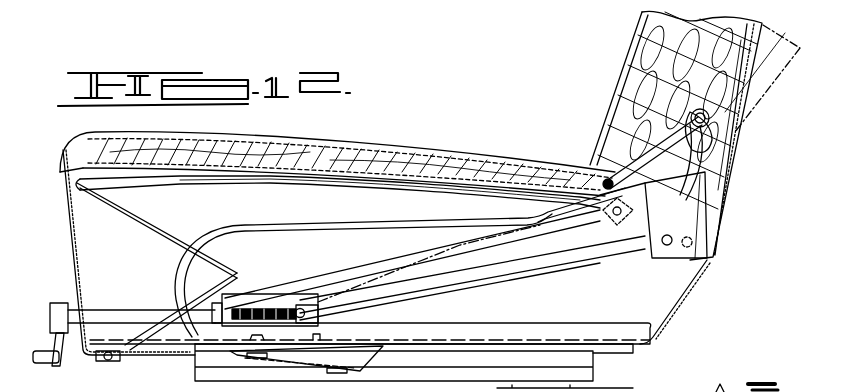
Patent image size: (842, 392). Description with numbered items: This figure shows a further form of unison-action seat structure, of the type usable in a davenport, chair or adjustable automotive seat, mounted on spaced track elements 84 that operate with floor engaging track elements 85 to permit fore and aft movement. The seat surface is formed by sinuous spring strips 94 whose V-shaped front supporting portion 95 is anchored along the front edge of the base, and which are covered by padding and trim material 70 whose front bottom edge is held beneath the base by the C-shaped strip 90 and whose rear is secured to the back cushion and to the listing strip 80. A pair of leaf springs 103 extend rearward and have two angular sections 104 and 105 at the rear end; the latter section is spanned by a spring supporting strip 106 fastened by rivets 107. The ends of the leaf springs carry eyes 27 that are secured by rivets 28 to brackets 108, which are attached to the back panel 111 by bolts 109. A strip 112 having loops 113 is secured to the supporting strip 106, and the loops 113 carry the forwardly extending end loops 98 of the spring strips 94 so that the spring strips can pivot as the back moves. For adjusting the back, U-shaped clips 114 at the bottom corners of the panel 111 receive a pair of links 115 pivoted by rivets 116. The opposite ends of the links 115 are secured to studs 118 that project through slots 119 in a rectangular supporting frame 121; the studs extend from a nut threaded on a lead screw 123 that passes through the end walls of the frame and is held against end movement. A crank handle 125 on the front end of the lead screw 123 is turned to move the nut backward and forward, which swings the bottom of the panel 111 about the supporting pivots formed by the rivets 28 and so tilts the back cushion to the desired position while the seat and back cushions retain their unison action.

The eye 27 is at (710, 125).
The rivet 28 is at (706, 139).
The padding and trim material 70 is at (386, 140).
The listing strip 80 is at (702, 192).
The track element 84 is at (636, 350).
The floor engaging track element 85 is at (596, 366).
The C-shaped strip 90 is at (102, 366).
The sinuous spring strip 94 is at (360, 180).
The V-shaped front supporting portion 95 is at (160, 232).
The end loop 98 is at (632, 236).
The leaf spring 103 is at (408, 224).
The angular section 104 is at (548, 217).
The angular section 105 is at (650, 148).
The spring supporting strip 106 is at (692, 172).
The rivet 107 is at (676, 215).
The bracket 108 is at (718, 105).
The bolt 109 is at (745, 150).
The panel 111 is at (722, 228).
The strip 112 is at (686, 188).
The loop 113 is at (606, 180).
The U-shaped clip 114 is at (670, 262).
The link 115 is at (556, 228).
The rivet 116 is at (661, 250).
The stud 118 is at (310, 300).
The slot 119 is at (272, 305).
The rectangular supporting frame 121 is at (245, 290).
The lead screw 123 is at (105, 318).
The crank handle 125 is at (60, 300).